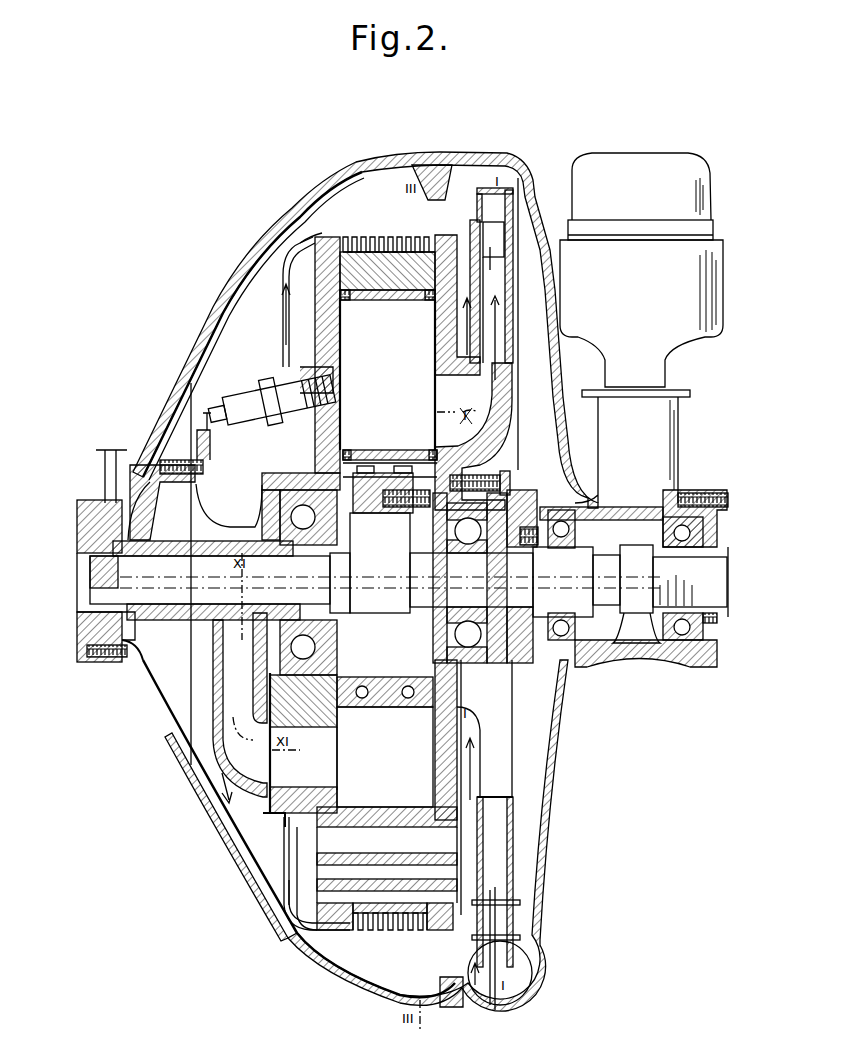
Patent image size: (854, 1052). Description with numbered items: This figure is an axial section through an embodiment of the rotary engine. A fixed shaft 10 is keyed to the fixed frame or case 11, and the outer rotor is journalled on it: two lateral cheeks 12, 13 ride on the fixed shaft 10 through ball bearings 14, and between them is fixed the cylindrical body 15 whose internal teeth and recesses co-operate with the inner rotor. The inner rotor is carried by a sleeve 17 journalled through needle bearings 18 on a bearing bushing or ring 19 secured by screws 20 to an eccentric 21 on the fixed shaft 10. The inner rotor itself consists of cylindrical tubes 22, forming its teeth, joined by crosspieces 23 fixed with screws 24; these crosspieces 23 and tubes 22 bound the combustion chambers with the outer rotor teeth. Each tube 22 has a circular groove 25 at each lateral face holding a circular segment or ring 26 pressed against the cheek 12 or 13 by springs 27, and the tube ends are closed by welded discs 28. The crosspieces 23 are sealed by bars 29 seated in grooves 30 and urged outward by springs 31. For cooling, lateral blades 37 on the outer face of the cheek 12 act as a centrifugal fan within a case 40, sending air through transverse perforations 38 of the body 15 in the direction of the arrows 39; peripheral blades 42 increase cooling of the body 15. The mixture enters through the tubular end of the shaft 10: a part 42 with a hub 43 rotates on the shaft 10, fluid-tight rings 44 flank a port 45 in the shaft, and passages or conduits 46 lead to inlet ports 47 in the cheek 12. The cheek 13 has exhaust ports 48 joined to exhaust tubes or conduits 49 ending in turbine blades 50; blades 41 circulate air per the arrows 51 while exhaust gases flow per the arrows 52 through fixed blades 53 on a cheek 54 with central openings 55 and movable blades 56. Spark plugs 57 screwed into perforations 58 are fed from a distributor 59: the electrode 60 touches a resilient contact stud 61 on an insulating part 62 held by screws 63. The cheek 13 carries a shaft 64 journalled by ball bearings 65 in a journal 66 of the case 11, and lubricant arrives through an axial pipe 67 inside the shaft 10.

The fixed shaft 10 is at (110, 510).
The fixed frame or case 11 is at (303, 212).
The lateral cheek 12 is at (290, 283).
The lateral cheek 13 is at (447, 338).
The ball bearings 14 is at (267, 490).
The cylindrical body 15 is at (392, 237).
The sleeve 17 is at (363, 468).
The needle bearings 18 is at (260, 473).
The bearing bushing or ring 19 is at (379, 468).
The screws 20 is at (495, 471).
The eccentric 21 is at (380, 528).
The cylindrical tubes 22 is at (388, 289).
The crosspieces 23 is at (397, 707).
The screws 24 is at (383, 681).
The circular groove 25 is at (352, 294).
The circular segment or ring 26 is at (340, 237).
The springs 27 is at (355, 237).
The discs 28 is at (500, 412).
The bars 29 is at (288, 750).
The grooves 30 is at (350, 703).
The springs 31 is at (362, 688).
The lateral blades 37 is at (293, 246).
The transverse perforations 38 is at (358, 893).
The arrows 39 is at (313, 900).
The case 40 is at (310, 237).
The blades 41 is at (441, 192).
The part having a hub 42 is at (410, 237).
The hub 43 is at (215, 540).
The fluid-tight rings 44 is at (207, 547).
The port 45 is at (213, 643).
The passages or conduits 46 is at (222, 752).
The inlet ports 47 is at (293, 773).
The exhaust ports 48 is at (443, 412).
The exhaust tubes or conduits 49 is at (428, 468).
The turbine blades 50 is at (488, 268).
The arrows 51 is at (476, 305).
The arrows 52 is at (495, 345).
The fixed blades 53 is at (518, 178).
The cheek 54 is at (517, 920).
The central openings 55 is at (555, 777).
The movable blades 56 is at (490, 247).
The spark plugs 57 is at (268, 378).
The perforations 58 is at (287, 333).
The distributor 59 is at (697, 253).
The electrode 60 is at (215, 375).
The resilient contact stud 61 is at (200, 422).
The insulating part 62 is at (187, 452).
The screws 63 is at (170, 463).
The shaft 64 is at (625, 647).
The ball bearings 65 is at (682, 533).
The journal 66 is at (607, 512).
The axial pipe 67 is at (118, 670).